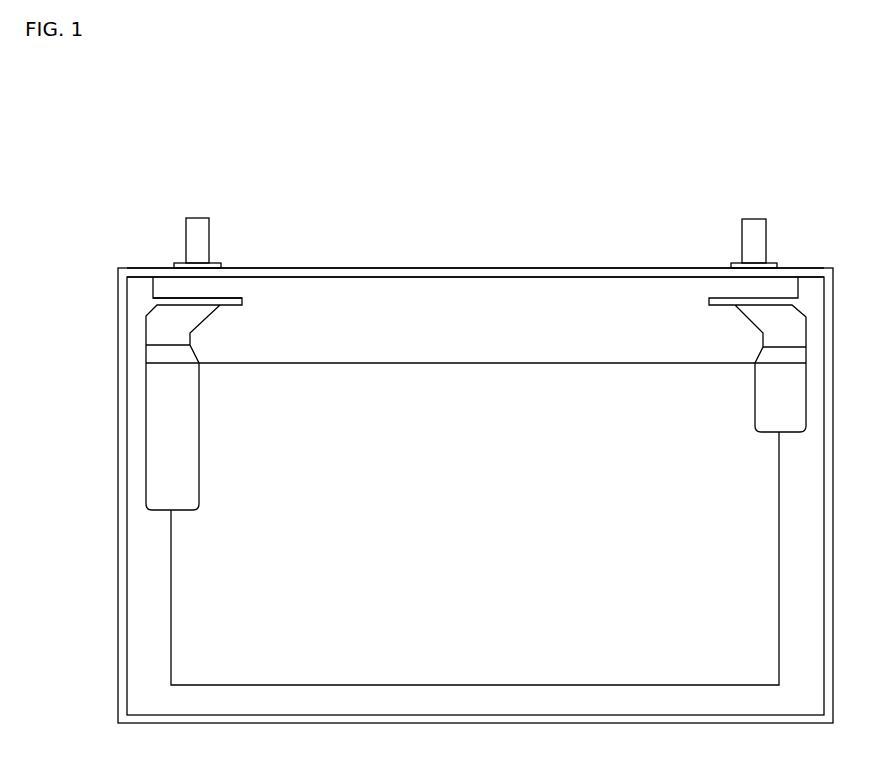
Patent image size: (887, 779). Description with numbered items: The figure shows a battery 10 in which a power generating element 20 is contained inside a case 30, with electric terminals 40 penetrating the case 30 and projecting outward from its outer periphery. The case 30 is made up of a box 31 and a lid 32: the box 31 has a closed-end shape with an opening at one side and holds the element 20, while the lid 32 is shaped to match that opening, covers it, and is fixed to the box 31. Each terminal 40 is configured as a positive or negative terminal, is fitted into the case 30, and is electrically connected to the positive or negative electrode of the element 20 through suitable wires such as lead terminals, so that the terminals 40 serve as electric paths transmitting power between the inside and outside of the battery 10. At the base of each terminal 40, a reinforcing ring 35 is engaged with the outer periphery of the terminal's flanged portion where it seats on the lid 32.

The battery 10 is at (440, 417).
The power generating element 20 is at (186, 594).
The case 30 is at (92, 272).
The box 31 is at (124, 318).
The lid 32 is at (152, 272).
The reinforcing ring 35 is at (230, 264).
The electric terminal 40 is at (203, 236).